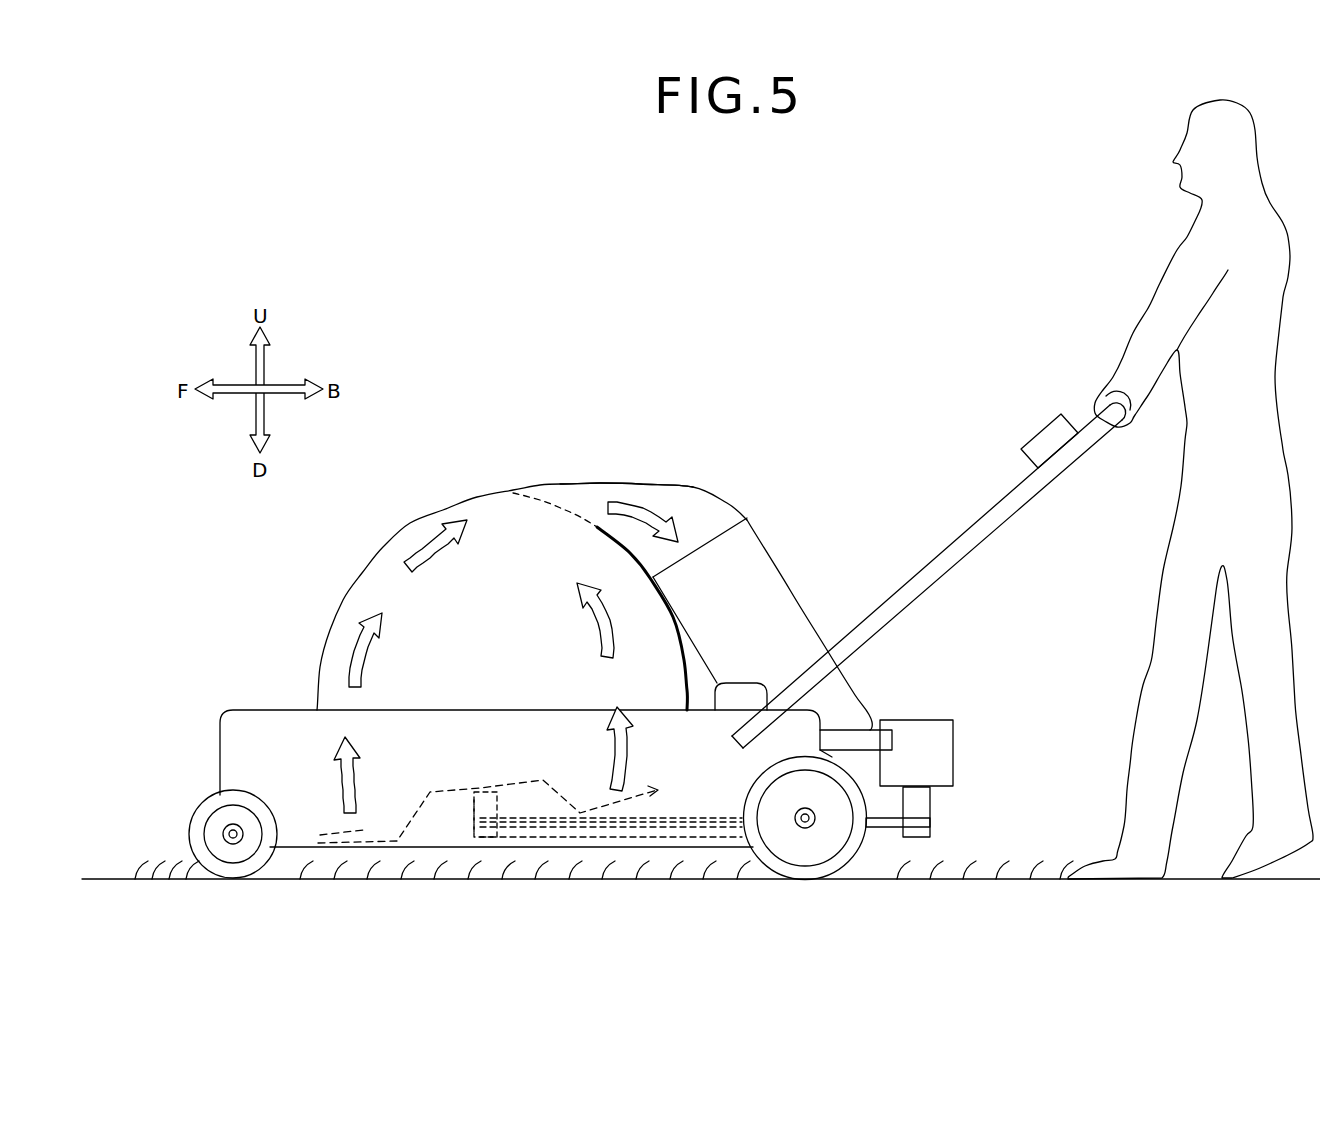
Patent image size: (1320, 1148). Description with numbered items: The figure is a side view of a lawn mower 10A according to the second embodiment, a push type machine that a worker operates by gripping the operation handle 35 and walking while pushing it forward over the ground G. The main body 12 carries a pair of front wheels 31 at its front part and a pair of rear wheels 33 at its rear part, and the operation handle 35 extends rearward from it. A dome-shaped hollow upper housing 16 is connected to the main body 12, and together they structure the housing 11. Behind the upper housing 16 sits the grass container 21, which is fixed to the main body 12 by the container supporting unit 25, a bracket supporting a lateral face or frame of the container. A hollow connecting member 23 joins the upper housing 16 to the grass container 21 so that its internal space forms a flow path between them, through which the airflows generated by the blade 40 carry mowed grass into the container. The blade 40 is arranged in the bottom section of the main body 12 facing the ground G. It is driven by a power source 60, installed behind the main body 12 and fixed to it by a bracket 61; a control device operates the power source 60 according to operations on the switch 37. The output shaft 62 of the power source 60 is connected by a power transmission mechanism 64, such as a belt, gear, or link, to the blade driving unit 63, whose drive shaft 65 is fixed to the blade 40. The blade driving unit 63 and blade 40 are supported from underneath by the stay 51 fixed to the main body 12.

The lawn mower 10A is at (530, 360).
The housing 11 is at (277, 576).
The main body 12 is at (277, 708).
The upper housing 16 is at (328, 640).
The grass container 21 is at (764, 551).
The connecting member 23 is at (689, 487).
The container supporting unit 25 is at (735, 682).
The front wheels 31 is at (203, 802).
The rear wheels 33 is at (762, 861).
The operation handle 35 is at (967, 530).
The switch 37 is at (1031, 446).
The blade 40 is at (427, 790).
The stay 51 is at (663, 850).
The power source 60 is at (955, 757).
The bracket 61 is at (827, 731).
The output shaft 62 is at (932, 825).
The blade driving unit 63 is at (476, 820).
The power transmission mechanism 64 is at (714, 815).
The drive shaft 65 is at (485, 788).
The ground G is at (102, 878).